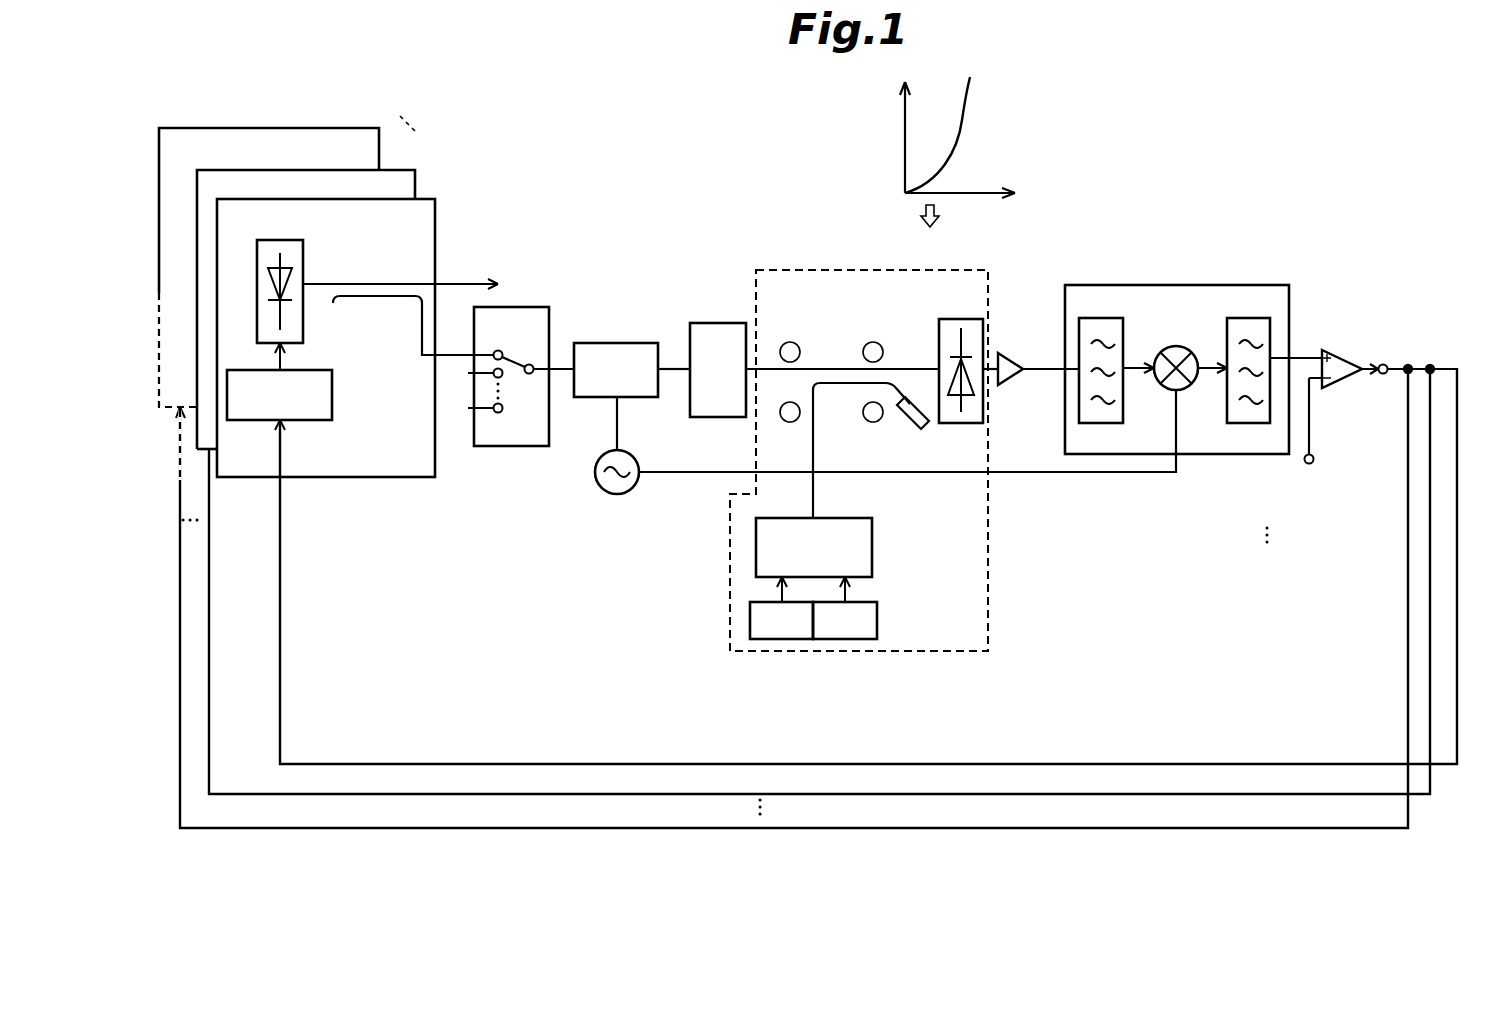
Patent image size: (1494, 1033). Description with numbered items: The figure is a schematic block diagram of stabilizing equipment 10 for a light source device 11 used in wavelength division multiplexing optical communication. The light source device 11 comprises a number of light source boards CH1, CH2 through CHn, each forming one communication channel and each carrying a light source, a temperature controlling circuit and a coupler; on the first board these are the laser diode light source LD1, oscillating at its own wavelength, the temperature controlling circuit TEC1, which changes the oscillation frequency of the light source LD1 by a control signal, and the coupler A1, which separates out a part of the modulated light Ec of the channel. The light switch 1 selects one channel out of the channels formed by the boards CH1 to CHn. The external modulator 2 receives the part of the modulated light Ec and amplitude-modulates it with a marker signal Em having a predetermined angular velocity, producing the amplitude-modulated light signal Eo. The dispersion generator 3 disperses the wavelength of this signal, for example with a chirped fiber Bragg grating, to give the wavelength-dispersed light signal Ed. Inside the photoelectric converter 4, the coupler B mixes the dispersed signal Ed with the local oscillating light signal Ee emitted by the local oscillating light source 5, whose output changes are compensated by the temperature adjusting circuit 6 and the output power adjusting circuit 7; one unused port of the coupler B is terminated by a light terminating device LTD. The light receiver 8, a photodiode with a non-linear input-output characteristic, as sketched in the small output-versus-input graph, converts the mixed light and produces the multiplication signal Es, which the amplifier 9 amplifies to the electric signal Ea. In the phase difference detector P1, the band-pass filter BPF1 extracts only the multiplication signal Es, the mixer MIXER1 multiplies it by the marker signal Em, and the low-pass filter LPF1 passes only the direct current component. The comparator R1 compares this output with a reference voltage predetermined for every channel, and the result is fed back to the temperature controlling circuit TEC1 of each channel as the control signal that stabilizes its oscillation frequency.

The light switch 1 is at (539, 312).
The external modulator 2 is at (649, 332).
The dispersion generator 3 is at (732, 312).
The photoelectric converter 4 is at (757, 270).
The local oscillating light source 5 is at (858, 504).
The temperature adjusting circuit 6 is at (799, 592).
The output power adjusting circuit 7 is at (867, 592).
The light receiver 8 is at (942, 318).
The amplifier 9 is at (1002, 360).
The stabilizing equipment 10 is at (1288, 210).
The light source device 11 is at (613, 170).
The light source board CH1 is at (433, 199).
The light source board CH2 is at (414, 175).
The light source board CHn is at (379, 128).
The light source LD1 is at (259, 240).
The temperature controlling circuit TEC1 is at (297, 421).
The coupler A1 is at (400, 306).
The coupler B is at (837, 413).
The light terminating device LTD is at (920, 437).
The marker signal Em is at (621, 476).
The modulated light Ec is at (560, 358).
The amplitude-modulated light signal Eo is at (675, 358).
The wavelength-dispersed light signal Ed is at (757, 378).
The local oscillating light signal Ee is at (813, 508).
The multiplication signal Es is at (990, 365).
The signal Ea is at (1035, 367).
The phase difference detector P1 is at (1131, 286).
The band-pass filter BPF1 is at (1100, 357).
The mixer MIXER1 is at (1170, 344).
The low-pass filter LPF1 is at (1250, 357).
The comparator R1 is at (1304, 442).